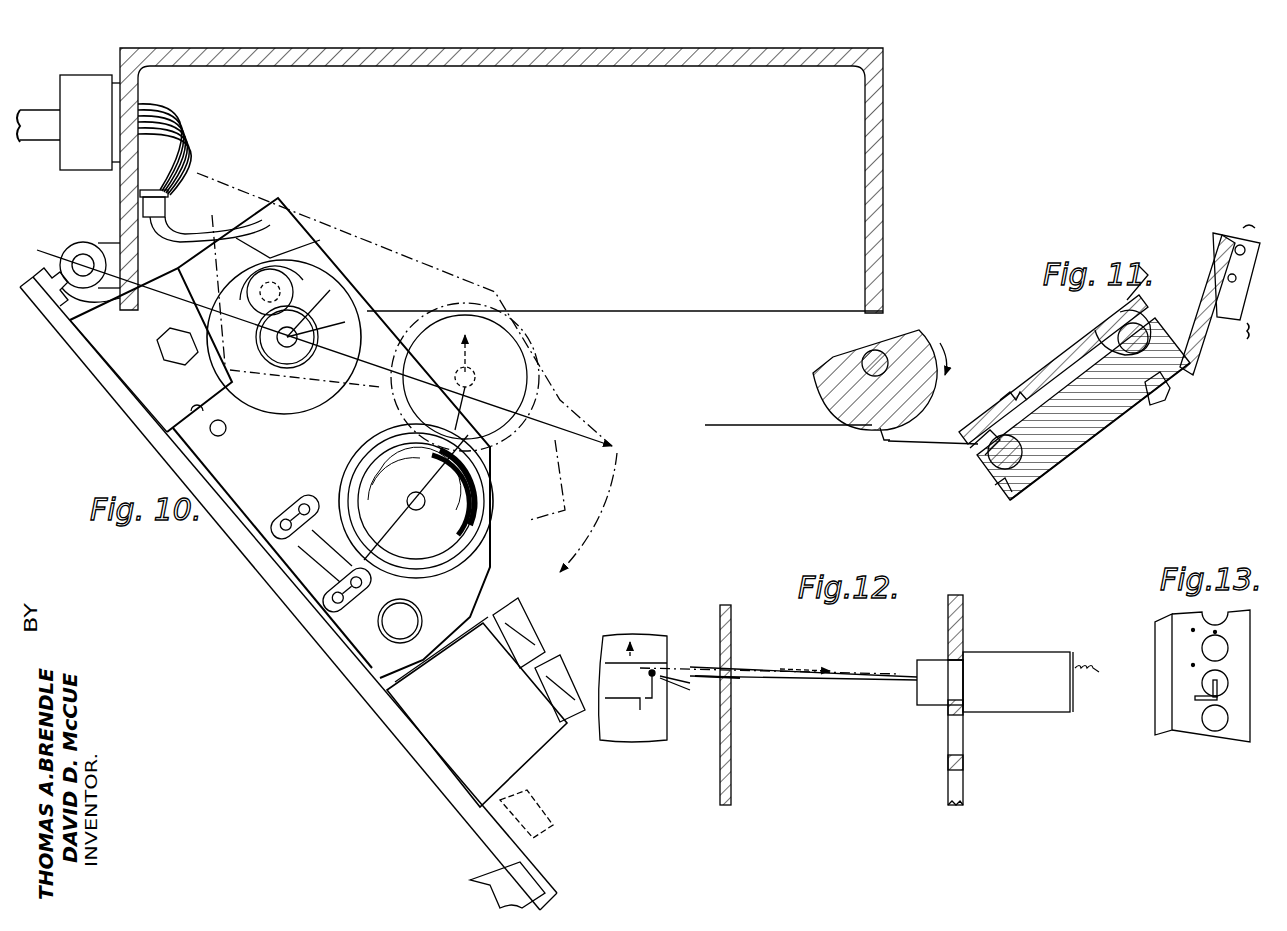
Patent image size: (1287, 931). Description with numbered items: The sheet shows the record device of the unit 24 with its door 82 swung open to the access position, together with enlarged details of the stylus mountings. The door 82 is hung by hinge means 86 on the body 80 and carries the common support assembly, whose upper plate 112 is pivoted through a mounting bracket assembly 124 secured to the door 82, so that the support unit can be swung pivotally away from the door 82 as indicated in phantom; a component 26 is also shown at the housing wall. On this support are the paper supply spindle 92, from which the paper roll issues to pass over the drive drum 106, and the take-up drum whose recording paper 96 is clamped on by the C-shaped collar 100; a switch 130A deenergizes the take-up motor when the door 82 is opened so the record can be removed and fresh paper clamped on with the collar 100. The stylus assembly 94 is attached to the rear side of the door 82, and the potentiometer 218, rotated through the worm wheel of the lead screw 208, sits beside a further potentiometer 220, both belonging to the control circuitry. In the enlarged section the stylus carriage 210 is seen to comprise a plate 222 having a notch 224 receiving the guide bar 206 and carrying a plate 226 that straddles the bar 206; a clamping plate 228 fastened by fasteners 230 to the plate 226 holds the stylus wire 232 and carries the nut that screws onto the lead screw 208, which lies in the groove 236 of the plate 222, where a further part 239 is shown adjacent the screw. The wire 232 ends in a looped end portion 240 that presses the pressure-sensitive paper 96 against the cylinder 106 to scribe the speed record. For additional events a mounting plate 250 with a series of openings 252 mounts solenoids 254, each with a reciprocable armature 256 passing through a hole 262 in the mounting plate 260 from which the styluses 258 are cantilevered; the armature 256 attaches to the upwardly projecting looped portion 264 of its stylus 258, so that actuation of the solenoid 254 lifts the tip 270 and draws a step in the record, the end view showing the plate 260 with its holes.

In FIG. 10, the unit 24 is at (889, 152).
In FIG. 10, the body 80 is at (880, 222).
In FIG. 10, the motor 26 is at (45, 128).
In FIG. 10, the hinge means 86 is at (90, 243).
In FIG. 10, the switch 130A is at (62, 302).
In FIG. 10, the mounting bracket assembly 124 is at (180, 397).
In FIG. 10, the upper plate 112 is at (309, 485).
In FIG. 10, the C-shaped collar 100 is at (351, 293).
In FIG. 10, the paper supply spindle 92 is at (475, 532).
In FIG. 10, the door 82 is at (429, 760).
In FIG. 10, the potentiometer 220 is at (524, 646).
In FIG. 10, the potentiometer 218 is at (550, 680).
In FIG. 10, the stylus assembly 94 is at (550, 753).
In FIG. 11, the drive drum 106 is at (916, 338).
In FIG. 11, the recording paper 96 is at (811, 426).
In FIG. 12, the recording paper 96 is at (625, 645).
In FIG. 11, the looped end portion 240 is at (880, 440).
In FIG. 11, the stylus wire 232 is at (918, 446).
In FIG. 11, the plate 226 is at (978, 452).
In FIG. 11, the guide bar 206 is at (992, 468).
In FIG. 11, the notch 224 is at (1000, 485).
In FIG. 11, the plate 222 is at (1055, 478).
In FIG. 11, the stylus carriage 210 is at (1080, 452).
In FIG. 11, the fasteners 230 is at (1005, 395).
In FIG. 11, the clamping plate 228 is at (1022, 387).
In FIG. 11, the groove 236 is at (1095, 331).
In FIG. 11, the roller 239 is at (1110, 322).
In FIG. 11, the lead screw 208 is at (1150, 318).
In FIG. 12, the mounting plate 260 is at (733, 620).
In FIG. 13, the mounting plate 260 is at (1233, 728).
In FIG. 12, the holes 262 is at (733, 652).
In FIG. 12, the armature 256 is at (790, 680).
In FIG. 12, the tip 270 is at (608, 718).
In FIG. 12, the laterally looped portion 264 is at (655, 720).
In FIG. 12, the stylus 258 is at (675, 700).
In FIG. 12, the openings 252 is at (966, 634).
In FIG. 12, the solenoid 254 is at (1025, 660).
In FIG. 12, the mounting plate 250 is at (965, 758).